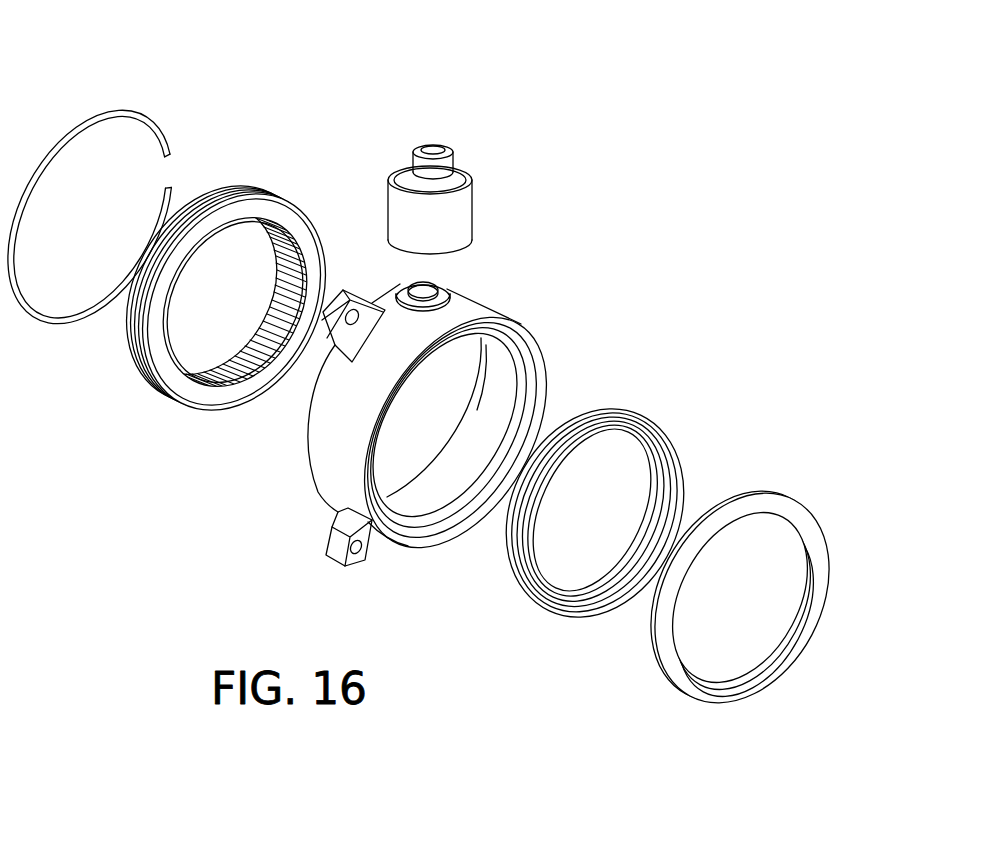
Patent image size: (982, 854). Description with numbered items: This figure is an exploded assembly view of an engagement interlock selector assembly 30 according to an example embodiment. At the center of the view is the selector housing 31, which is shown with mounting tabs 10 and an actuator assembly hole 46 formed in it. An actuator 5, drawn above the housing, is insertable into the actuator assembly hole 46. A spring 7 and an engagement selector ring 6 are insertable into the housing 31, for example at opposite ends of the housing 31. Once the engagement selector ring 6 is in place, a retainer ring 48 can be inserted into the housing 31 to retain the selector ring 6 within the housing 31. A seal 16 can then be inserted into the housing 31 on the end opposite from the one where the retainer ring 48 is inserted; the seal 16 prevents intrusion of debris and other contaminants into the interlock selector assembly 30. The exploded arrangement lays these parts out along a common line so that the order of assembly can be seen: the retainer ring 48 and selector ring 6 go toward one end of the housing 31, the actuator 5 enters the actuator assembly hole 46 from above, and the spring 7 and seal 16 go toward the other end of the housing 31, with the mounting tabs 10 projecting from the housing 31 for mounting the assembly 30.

The retainer ring 48 is at (132, 108).
The engagement selector ring 6 is at (283, 203).
The actuator 5 is at (452, 218).
The actuator assembly hole 46 is at (432, 279).
The selector housing 31 is at (330, 450).
The mounting tabs 10 is at (363, 560).
The spring 7 is at (663, 421).
The seal 16 is at (804, 503).
The engagement interlock selector assembly 30 is at (807, 267).